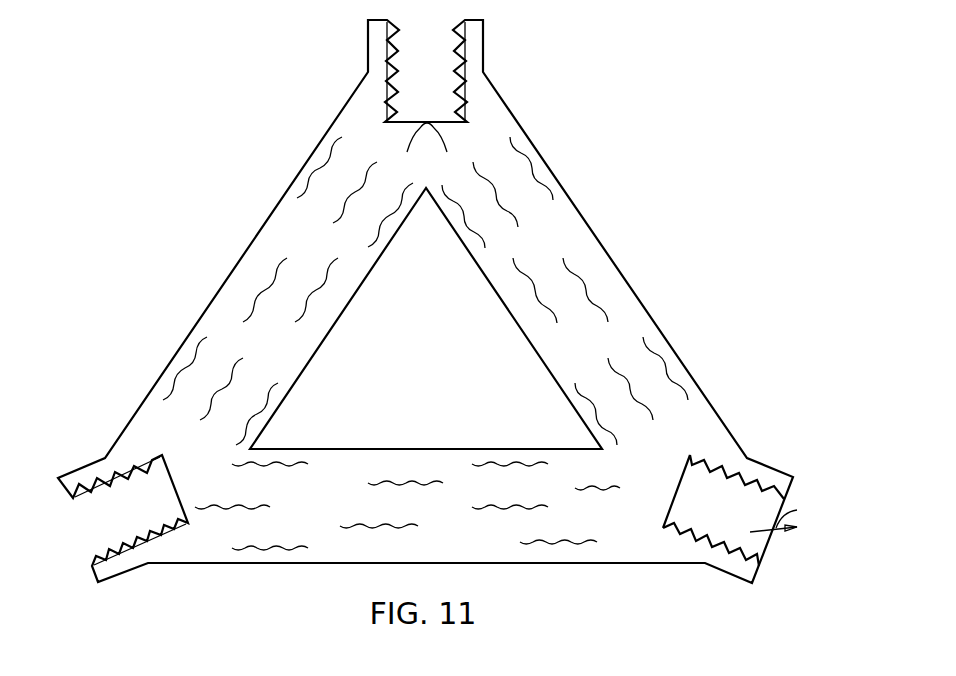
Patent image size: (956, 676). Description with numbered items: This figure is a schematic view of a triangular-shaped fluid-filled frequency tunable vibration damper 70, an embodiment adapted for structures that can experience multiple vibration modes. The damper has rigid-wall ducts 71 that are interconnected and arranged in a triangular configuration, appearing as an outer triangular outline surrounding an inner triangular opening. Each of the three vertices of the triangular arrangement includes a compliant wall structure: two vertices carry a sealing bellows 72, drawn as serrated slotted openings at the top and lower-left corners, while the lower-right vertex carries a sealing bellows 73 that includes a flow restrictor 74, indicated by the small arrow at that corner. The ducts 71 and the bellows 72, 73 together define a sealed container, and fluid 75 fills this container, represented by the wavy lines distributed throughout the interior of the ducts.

The fluid-filled frequency tunable vibration damper 70 is at (176, 106).
The rigid-wall ducts 71 is at (570, 198).
The sealing bellows 72 is at (395, 46).
The sealing bellows 73 is at (750, 543).
The flow restrictor 74 is at (777, 542).
The fluid 75 is at (275, 283).